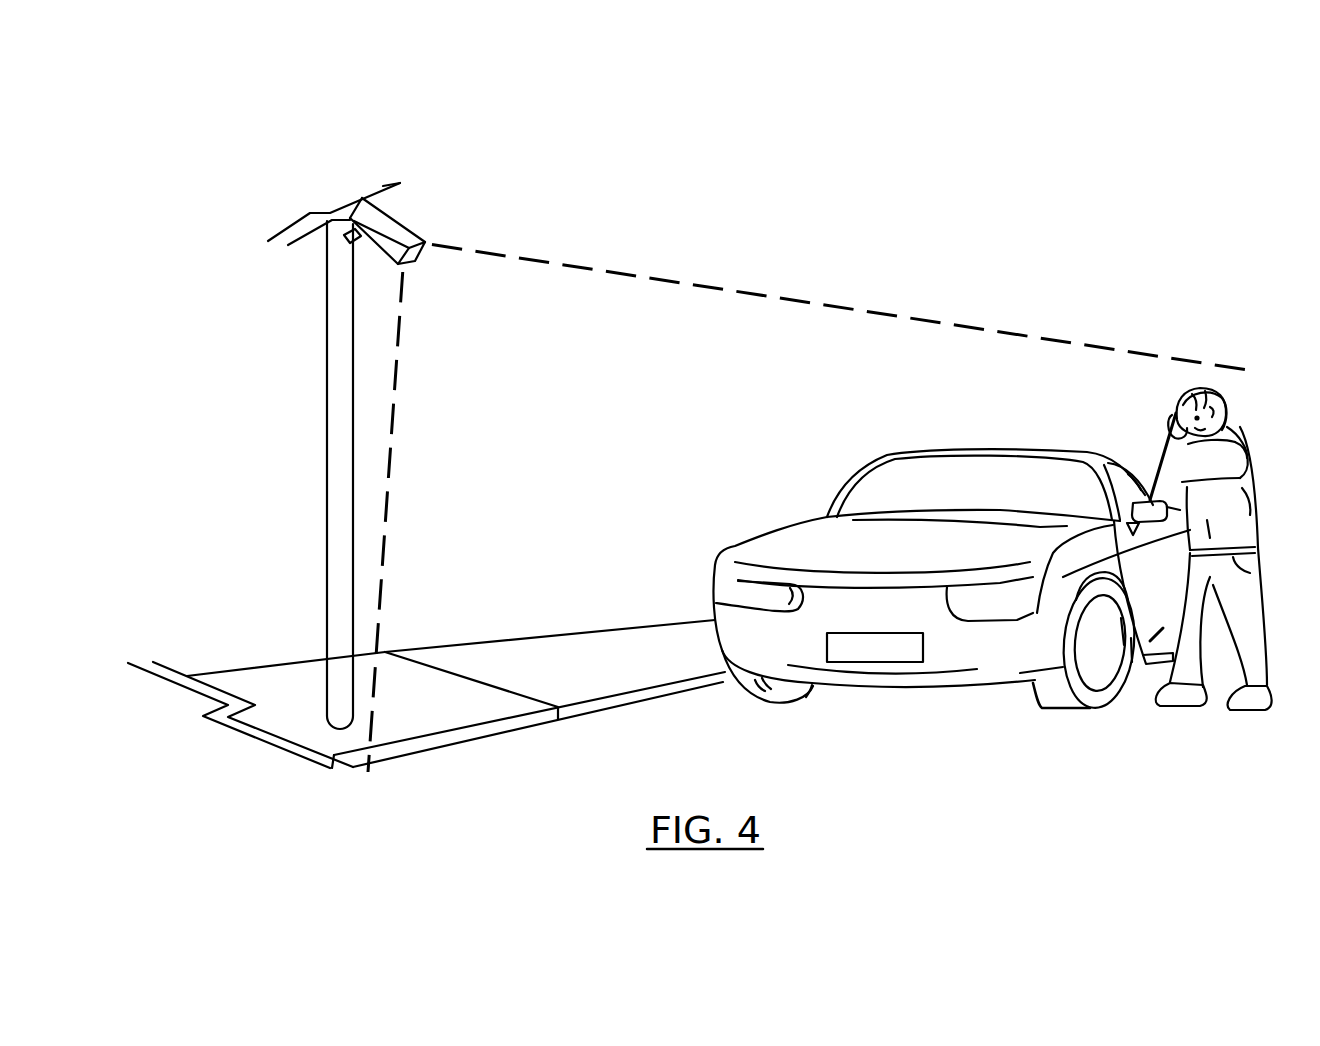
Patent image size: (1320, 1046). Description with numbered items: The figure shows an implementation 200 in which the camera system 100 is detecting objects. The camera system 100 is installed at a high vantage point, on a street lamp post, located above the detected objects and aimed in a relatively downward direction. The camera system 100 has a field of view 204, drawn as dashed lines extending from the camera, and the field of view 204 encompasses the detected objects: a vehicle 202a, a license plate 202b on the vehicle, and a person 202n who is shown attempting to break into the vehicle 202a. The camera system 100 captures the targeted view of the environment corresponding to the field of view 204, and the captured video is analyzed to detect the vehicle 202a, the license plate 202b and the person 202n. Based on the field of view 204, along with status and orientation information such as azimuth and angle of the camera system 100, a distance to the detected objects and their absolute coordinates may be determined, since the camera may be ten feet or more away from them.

The implementation 200 is at (449, 101).
The camera system 100 is at (404, 219).
The field of view 204 is at (691, 283).
The vehicle 202a is at (915, 450).
The license plate 202b is at (878, 633).
The person 202n is at (1185, 398).